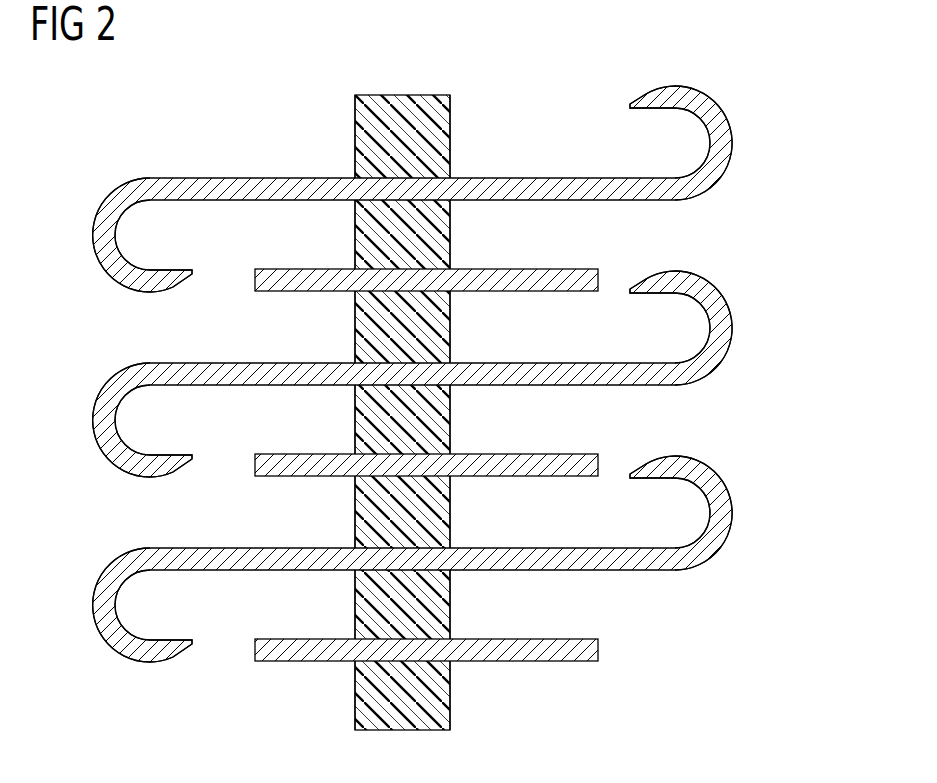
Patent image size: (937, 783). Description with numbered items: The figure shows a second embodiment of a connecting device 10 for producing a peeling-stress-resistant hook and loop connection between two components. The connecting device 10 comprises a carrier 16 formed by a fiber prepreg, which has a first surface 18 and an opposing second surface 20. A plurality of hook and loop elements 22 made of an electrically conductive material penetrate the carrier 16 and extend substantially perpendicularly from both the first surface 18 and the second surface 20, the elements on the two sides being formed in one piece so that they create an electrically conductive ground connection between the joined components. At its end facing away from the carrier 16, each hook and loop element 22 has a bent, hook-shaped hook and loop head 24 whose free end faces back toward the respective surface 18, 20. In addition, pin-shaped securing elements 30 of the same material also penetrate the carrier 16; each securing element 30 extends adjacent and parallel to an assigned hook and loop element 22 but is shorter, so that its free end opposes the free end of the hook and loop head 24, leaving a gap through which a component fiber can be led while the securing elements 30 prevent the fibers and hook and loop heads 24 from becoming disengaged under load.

The connecting device 10 is at (738, 66).
The carrier 16 is at (408, 107).
The first surface 18 is at (347, 320).
The second surface 20 is at (457, 307).
The hook and loop element 22 is at (251, 190).
The hook and loop head 24 is at (92, 243).
The securing element 30 is at (300, 278).